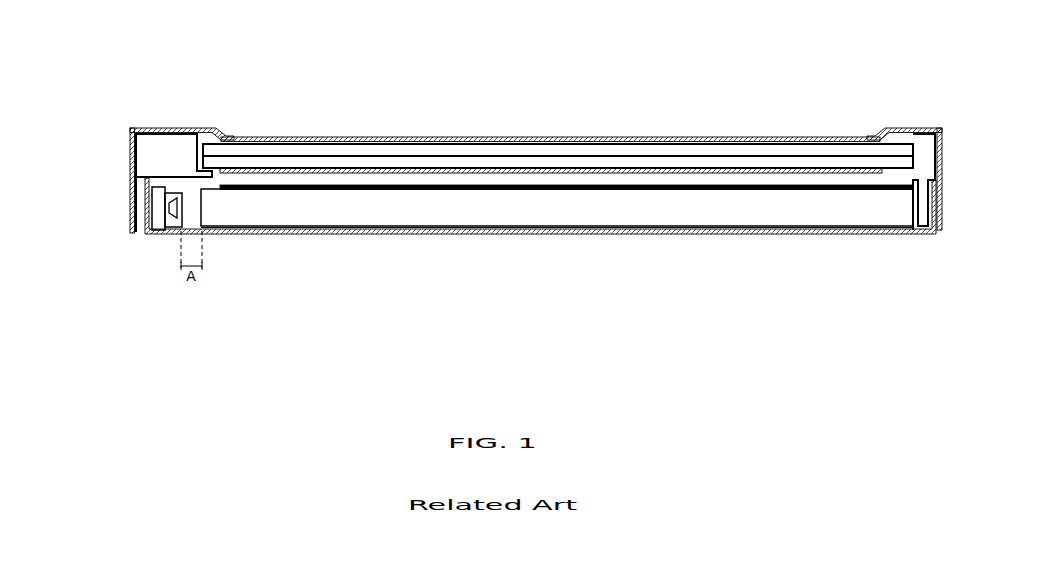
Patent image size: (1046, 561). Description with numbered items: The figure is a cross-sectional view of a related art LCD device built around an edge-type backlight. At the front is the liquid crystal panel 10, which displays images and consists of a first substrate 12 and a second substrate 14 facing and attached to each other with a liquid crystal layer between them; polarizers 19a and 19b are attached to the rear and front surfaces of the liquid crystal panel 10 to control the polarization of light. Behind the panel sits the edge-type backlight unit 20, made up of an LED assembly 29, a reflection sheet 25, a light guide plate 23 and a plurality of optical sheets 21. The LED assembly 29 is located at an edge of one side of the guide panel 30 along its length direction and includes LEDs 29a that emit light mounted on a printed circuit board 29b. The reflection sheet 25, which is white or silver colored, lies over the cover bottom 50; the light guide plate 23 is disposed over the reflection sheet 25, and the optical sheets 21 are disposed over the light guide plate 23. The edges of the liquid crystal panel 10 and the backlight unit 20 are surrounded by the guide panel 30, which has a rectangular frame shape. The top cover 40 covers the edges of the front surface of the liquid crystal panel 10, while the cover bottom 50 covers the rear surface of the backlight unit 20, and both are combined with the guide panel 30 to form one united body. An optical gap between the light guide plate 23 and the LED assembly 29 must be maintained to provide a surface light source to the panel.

The liquid crystal panel 10 is at (558, 105).
The first substrate 12 is at (512, 159).
The second substrate 14 is at (470, 152).
The polarizer 19a is at (668, 170).
The polarizer 19b is at (620, 137).
The edge-type backlight unit 20 is at (517, 281).
The optical sheets 21 is at (342, 190).
The light guide plate 23 is at (297, 212).
The reflection sheet 25 is at (255, 235).
The LED assembly 29 is at (151, 267).
The LEDs 29a is at (168, 230).
The printed circuit board 29b is at (148, 232).
The guide panel 30 is at (158, 157).
The top cover 40 is at (188, 128).
The cover bottom 50 is at (548, 235).